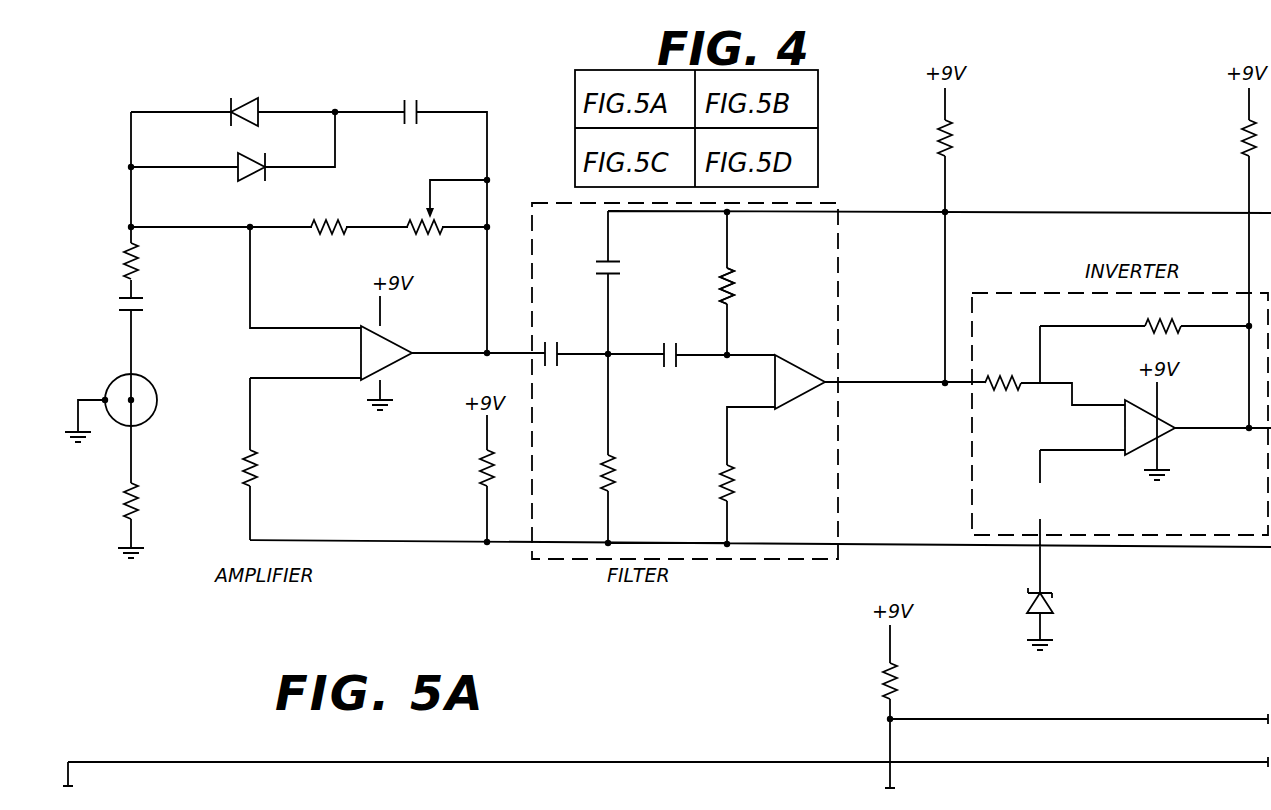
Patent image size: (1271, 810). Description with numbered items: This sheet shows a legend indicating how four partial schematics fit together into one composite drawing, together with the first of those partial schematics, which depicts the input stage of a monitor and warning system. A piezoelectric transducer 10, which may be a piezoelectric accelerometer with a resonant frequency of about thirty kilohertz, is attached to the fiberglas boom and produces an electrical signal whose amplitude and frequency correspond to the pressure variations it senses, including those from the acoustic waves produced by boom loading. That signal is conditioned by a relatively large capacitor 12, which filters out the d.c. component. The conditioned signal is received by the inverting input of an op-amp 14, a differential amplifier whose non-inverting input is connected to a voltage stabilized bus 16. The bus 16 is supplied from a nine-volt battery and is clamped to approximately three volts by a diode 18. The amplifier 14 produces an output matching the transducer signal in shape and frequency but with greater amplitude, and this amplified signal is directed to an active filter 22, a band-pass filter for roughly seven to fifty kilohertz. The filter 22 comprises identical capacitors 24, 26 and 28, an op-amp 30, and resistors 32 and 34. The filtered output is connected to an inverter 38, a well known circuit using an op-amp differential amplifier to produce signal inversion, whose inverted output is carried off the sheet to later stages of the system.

The piezoelectric transducer 10 is at (118, 386).
The capacitor 12 is at (120, 300).
The op-amp 14 is at (361, 355).
The voltage stabilized bus 16 is at (823, 543).
The diode 18 is at (1056, 611).
The active filter 22 is at (692, 516).
The capacitor 24 is at (671, 343).
The capacitor 26 is at (552, 320).
The capacitor 28 is at (621, 270).
The op-amp 30 is at (813, 352).
The resistor 32 is at (616, 465).
The resistor 34 is at (735, 290).
The inverter 38 is at (1052, 427).